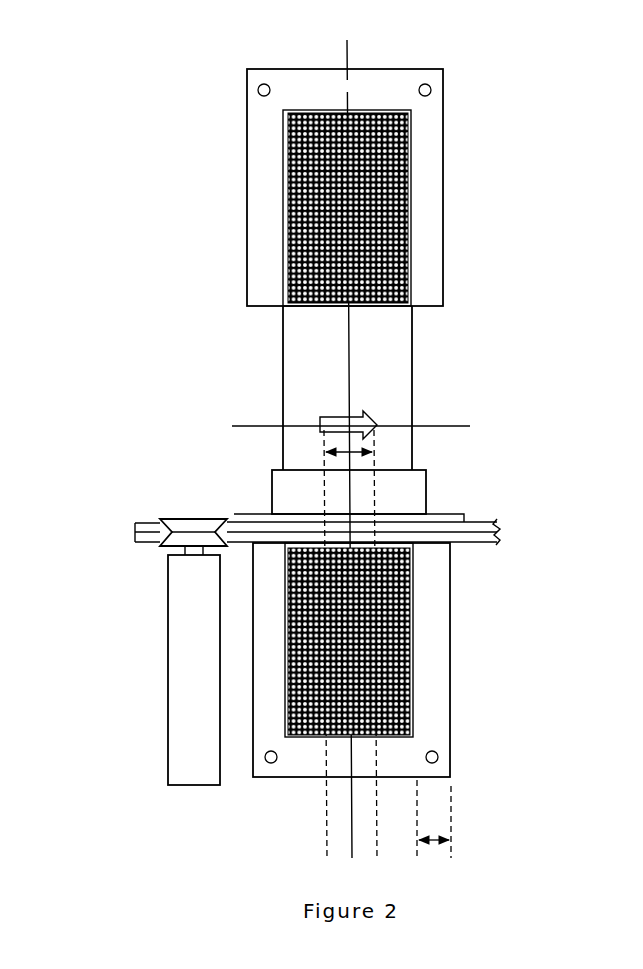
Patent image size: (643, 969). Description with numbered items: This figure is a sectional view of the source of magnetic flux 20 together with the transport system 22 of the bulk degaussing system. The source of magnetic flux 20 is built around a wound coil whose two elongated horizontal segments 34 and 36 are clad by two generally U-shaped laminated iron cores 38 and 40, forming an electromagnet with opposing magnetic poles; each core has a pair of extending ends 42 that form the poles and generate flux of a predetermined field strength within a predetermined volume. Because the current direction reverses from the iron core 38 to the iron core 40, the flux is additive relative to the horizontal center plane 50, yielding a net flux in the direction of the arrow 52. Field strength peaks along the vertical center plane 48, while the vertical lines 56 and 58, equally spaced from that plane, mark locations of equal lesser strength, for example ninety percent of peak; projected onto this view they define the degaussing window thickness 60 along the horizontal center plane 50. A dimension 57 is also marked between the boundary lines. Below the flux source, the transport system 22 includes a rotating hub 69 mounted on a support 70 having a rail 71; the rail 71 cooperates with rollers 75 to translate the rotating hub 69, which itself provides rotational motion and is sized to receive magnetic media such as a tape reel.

The source of magnetic flux 20 is at (206, 221).
The transport system 22 is at (490, 498).
The elongated horizontal segment 34 is at (318, 242).
The elongated horizontal segment 36 is at (292, 648).
The laminated iron core 38 is at (428, 158).
The laminated iron core 40 is at (428, 652).
The extending ends 42 is at (268, 308).
The vertical center plane 48 is at (347, 47).
The horizontal center plane 50 is at (252, 426).
The arrow 52 is at (373, 412).
The vertical line 56 is at (377, 795).
The offset distance 57 is at (432, 838).
The vertical line 58 is at (327, 821).
The degaussing window thickness 60 is at (352, 463).
The rotating hub 69 is at (290, 495).
The support 70 is at (140, 523).
The rail 71 is at (507, 523).
The rollers 75 is at (178, 541).